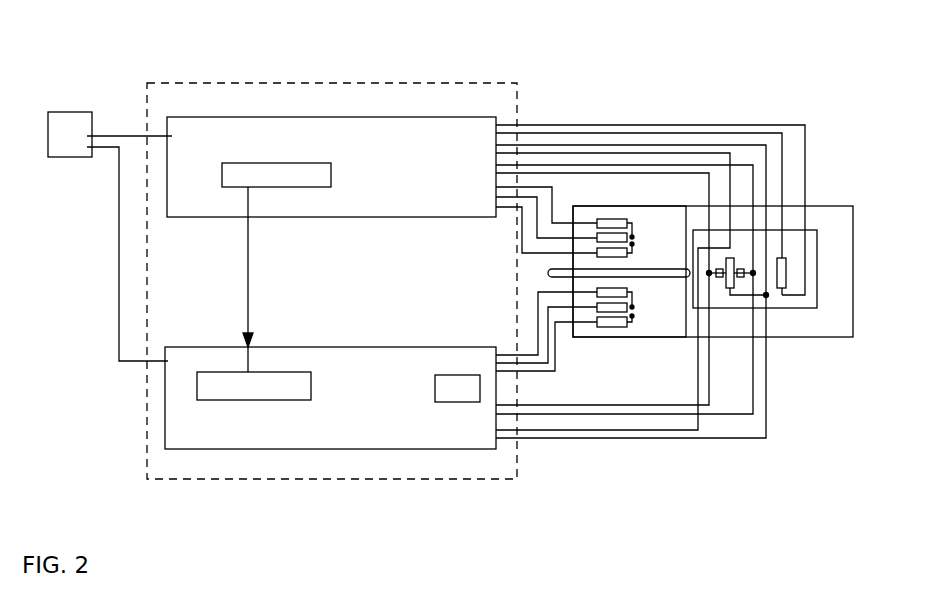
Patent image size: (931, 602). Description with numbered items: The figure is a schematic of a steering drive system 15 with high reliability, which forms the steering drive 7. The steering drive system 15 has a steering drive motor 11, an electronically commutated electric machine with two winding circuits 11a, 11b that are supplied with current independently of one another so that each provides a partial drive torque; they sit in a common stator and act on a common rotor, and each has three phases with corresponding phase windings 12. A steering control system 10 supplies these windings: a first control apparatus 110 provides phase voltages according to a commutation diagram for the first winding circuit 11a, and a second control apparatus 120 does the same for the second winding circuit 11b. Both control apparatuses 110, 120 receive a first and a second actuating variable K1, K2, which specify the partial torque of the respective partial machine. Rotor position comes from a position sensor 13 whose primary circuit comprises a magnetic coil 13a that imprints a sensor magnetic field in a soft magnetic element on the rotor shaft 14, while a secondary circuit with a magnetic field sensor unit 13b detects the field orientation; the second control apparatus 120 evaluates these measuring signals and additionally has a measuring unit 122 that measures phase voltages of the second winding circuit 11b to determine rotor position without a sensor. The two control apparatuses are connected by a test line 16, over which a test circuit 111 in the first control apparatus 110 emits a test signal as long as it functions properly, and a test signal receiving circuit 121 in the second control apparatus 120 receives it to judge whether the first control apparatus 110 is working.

The steering control system 10 is at (458, 83).
The steering drive system 15 is at (700, 88).
The first actuating variable K1 is at (103, 136).
The second actuating variable K2 is at (103, 147).
The first control apparatus 110 is at (400, 217).
The test circuit 111 is at (331, 175).
The test line 16 is at (248, 272).
The second control apparatus 120 is at (377, 347).
The test signal receiving circuit 121 is at (311, 384).
The measuring unit 122 is at (457, 402).
The steering drive 7 is at (810, 338).
The steering drive motor 11 is at (648, 331).
The rotor shaft 14 is at (553, 277).
The first winding circuit 11a is at (633, 245).
The second winding circuit 11b is at (633, 317).
The phase windings 12 is at (606, 326).
The position sensor 13 is at (789, 308).
The magnetic field sensor unit 13b is at (735, 263).
The magnetic coil 13a is at (786, 272).